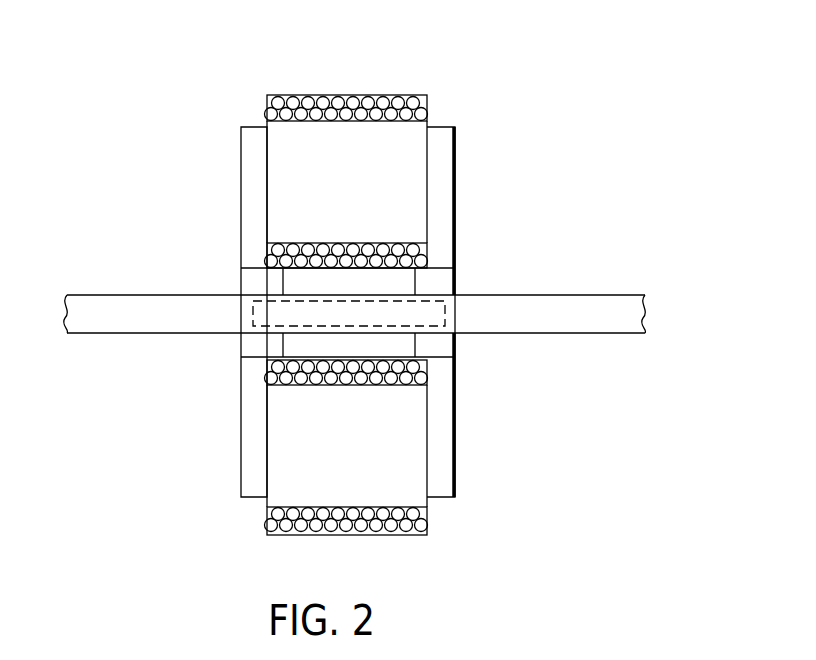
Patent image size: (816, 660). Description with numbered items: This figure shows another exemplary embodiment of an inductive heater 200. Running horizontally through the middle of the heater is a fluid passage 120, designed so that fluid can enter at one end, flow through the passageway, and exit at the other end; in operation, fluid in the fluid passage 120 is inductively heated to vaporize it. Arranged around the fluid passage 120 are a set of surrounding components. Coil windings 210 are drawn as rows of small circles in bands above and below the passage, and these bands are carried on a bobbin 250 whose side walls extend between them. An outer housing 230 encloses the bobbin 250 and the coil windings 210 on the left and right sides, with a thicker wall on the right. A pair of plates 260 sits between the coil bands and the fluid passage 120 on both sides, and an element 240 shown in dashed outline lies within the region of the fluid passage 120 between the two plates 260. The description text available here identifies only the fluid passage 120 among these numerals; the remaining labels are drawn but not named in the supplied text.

The linear actuator assembly 200 is at (165, 176).
The fluid passage 120 is at (150, 333).
The coil windings 210 is at (267, 102).
The housing 230 is at (456, 200).
The magnet 240 is at (447, 321).
The bobbin 250 is at (430, 103).
The bearing 260 is at (452, 281).